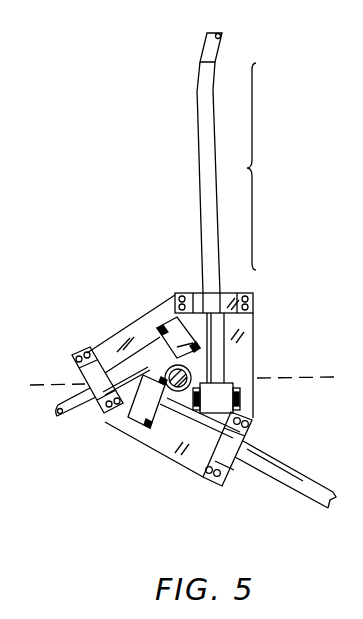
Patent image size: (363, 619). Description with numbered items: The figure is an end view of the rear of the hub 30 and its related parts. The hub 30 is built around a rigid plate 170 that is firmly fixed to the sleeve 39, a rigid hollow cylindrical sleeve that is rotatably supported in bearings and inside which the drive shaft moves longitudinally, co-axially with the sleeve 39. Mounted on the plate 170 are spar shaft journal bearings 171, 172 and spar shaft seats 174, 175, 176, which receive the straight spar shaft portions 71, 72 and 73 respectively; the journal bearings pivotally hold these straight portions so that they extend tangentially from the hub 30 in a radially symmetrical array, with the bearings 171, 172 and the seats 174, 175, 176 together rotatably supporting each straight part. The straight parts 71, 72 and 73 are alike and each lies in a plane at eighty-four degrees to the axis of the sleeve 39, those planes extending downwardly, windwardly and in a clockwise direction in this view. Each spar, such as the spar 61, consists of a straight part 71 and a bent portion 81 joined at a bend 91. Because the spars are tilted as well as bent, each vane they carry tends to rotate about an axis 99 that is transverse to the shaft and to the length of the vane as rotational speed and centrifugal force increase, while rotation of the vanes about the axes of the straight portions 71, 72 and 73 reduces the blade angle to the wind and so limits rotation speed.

The hub 30 is at (290, 336).
The sleeve 39 is at (173, 389).
The spar 61 is at (263, 166).
The straight spar shaft portion 71 is at (213, 263).
The straight spar shaft portion 72 is at (60, 411).
The straight spar shaft portion 73 is at (279, 477).
The bent portion 81 is at (210, 73).
The bend 91 is at (196, 92).
The axis 99 is at (299, 377).
The rigid plate 170 is at (112, 331).
The spar shaft journal bearing 171 is at (250, 297).
The spar shaft journal bearing 172 is at (76, 356).
The spar shaft seat 174 is at (232, 401).
The spar shaft seat 175 is at (145, 405).
The spar shaft seat 176 is at (160, 330).